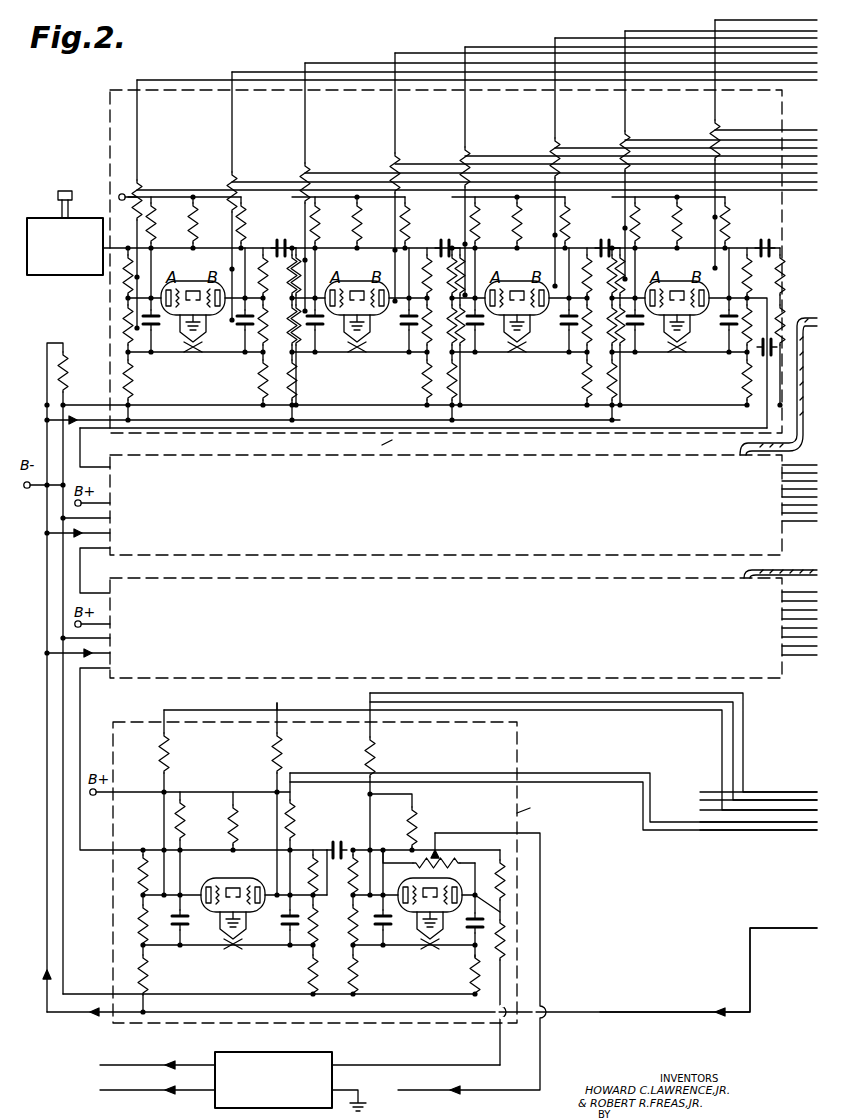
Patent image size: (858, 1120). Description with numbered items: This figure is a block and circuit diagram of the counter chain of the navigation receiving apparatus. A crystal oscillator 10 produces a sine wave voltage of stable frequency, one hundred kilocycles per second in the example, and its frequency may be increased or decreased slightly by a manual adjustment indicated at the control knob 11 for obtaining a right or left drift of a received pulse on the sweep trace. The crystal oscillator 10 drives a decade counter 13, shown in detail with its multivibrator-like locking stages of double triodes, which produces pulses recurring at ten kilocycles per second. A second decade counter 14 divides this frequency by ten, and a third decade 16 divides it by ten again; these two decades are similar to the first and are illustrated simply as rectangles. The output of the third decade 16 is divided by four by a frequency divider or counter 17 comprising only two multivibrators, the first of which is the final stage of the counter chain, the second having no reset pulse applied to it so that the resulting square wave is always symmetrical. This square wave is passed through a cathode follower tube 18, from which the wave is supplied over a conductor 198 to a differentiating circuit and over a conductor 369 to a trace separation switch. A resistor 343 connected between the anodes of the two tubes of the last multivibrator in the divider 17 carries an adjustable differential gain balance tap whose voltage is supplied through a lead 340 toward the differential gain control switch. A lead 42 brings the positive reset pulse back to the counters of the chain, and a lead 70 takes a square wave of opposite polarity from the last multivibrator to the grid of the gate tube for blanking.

The crystal oscillator 10 is at (64, 278).
The control knob 11 is at (80, 184).
The decade counter 13 is at (188, 141).
The second decade counter 14 is at (172, 508).
The third decade 16 is at (160, 632).
The frequency divider or counter 17 is at (218, 756).
The cathode follower tube 18 is at (340, 1078).
The lead 42 is at (682, 995).
The lead 70 is at (800, 792).
The conductor 198 is at (122, 1062).
The lead 340 is at (540, 1052).
The resistor 343 is at (470, 830).
The conductor 369 is at (175, 1092).